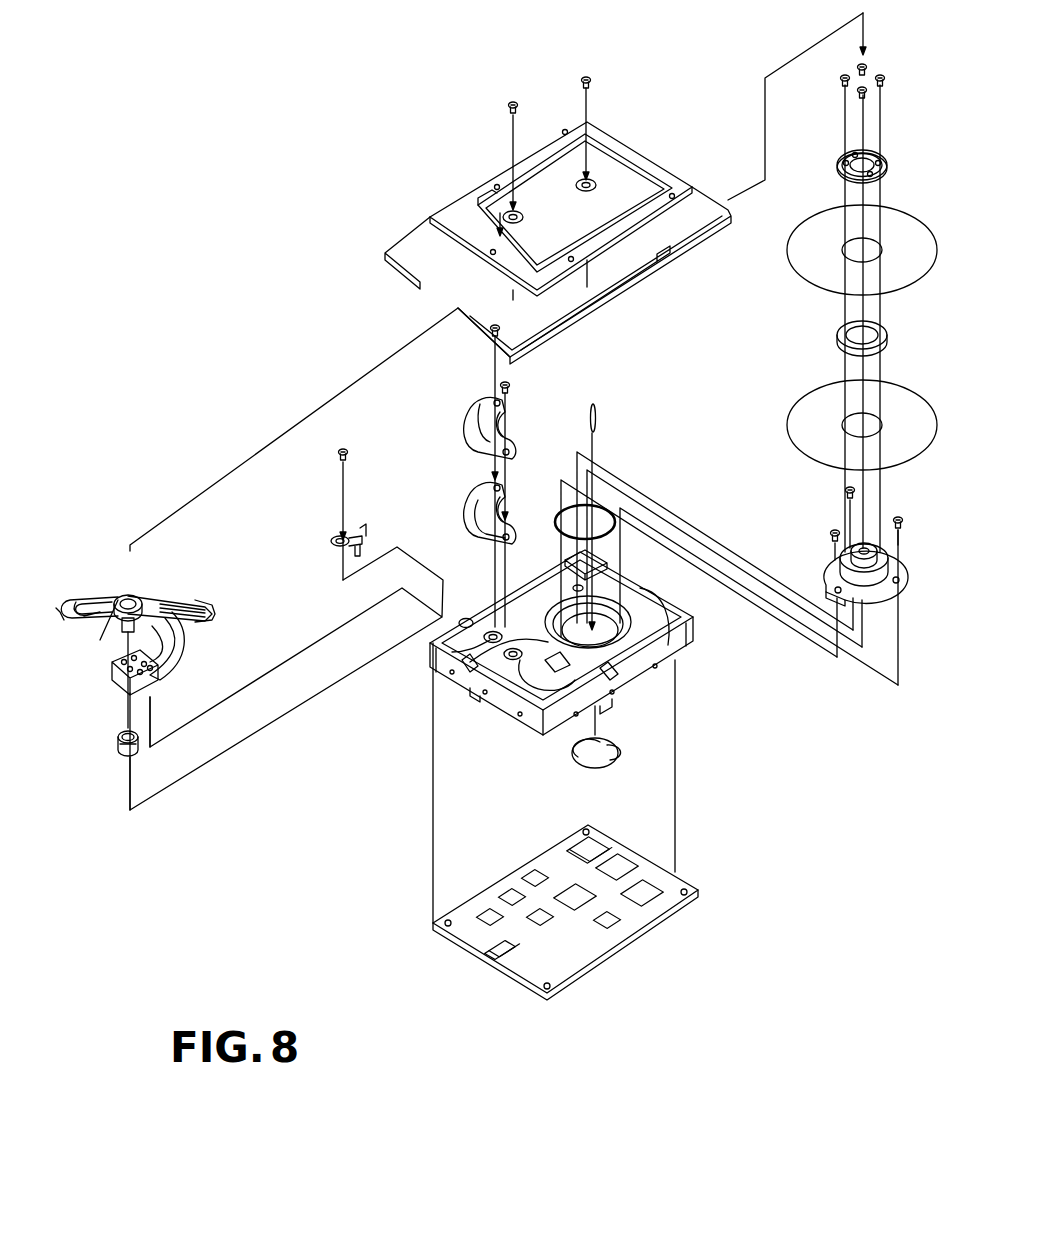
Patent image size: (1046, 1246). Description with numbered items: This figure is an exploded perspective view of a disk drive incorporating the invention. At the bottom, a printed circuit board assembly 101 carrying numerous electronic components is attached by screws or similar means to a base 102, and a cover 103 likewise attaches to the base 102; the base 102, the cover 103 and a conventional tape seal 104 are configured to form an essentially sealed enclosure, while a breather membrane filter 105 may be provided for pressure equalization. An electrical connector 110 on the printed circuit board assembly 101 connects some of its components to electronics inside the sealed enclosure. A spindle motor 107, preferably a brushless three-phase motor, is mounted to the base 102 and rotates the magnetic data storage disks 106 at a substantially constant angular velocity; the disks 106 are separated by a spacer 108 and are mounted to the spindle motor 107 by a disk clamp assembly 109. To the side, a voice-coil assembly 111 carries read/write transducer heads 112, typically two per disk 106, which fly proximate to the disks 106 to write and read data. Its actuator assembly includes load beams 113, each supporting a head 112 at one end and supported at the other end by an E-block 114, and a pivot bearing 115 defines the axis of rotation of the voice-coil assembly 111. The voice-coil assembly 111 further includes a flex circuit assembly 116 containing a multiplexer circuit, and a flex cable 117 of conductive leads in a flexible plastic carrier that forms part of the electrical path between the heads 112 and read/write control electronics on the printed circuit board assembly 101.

The printed circuit board assembly 101 is at (625, 960).
The base 102 is at (693, 615).
The cover 103 is at (458, 197).
The tape seal 104 is at (697, 207).
The breather membrane filter 105 is at (580, 766).
The magnetic data storage disk 106 is at (800, 283).
The spindle motor 107 is at (830, 568).
The spacer 108 is at (836, 333).
The disk clamp assembly 109 is at (833, 180).
The electrical connector 110 is at (488, 955).
The voice-coil assembly 111 is at (76, 618).
The read/write transducer head 112 is at (186, 608).
The load beam 113 is at (182, 622).
The E-block 114 is at (112, 597).
The pivot bearing 115 is at (140, 596).
The flex circuit assembly 116 is at (120, 705).
The flex cable 117 is at (110, 678).